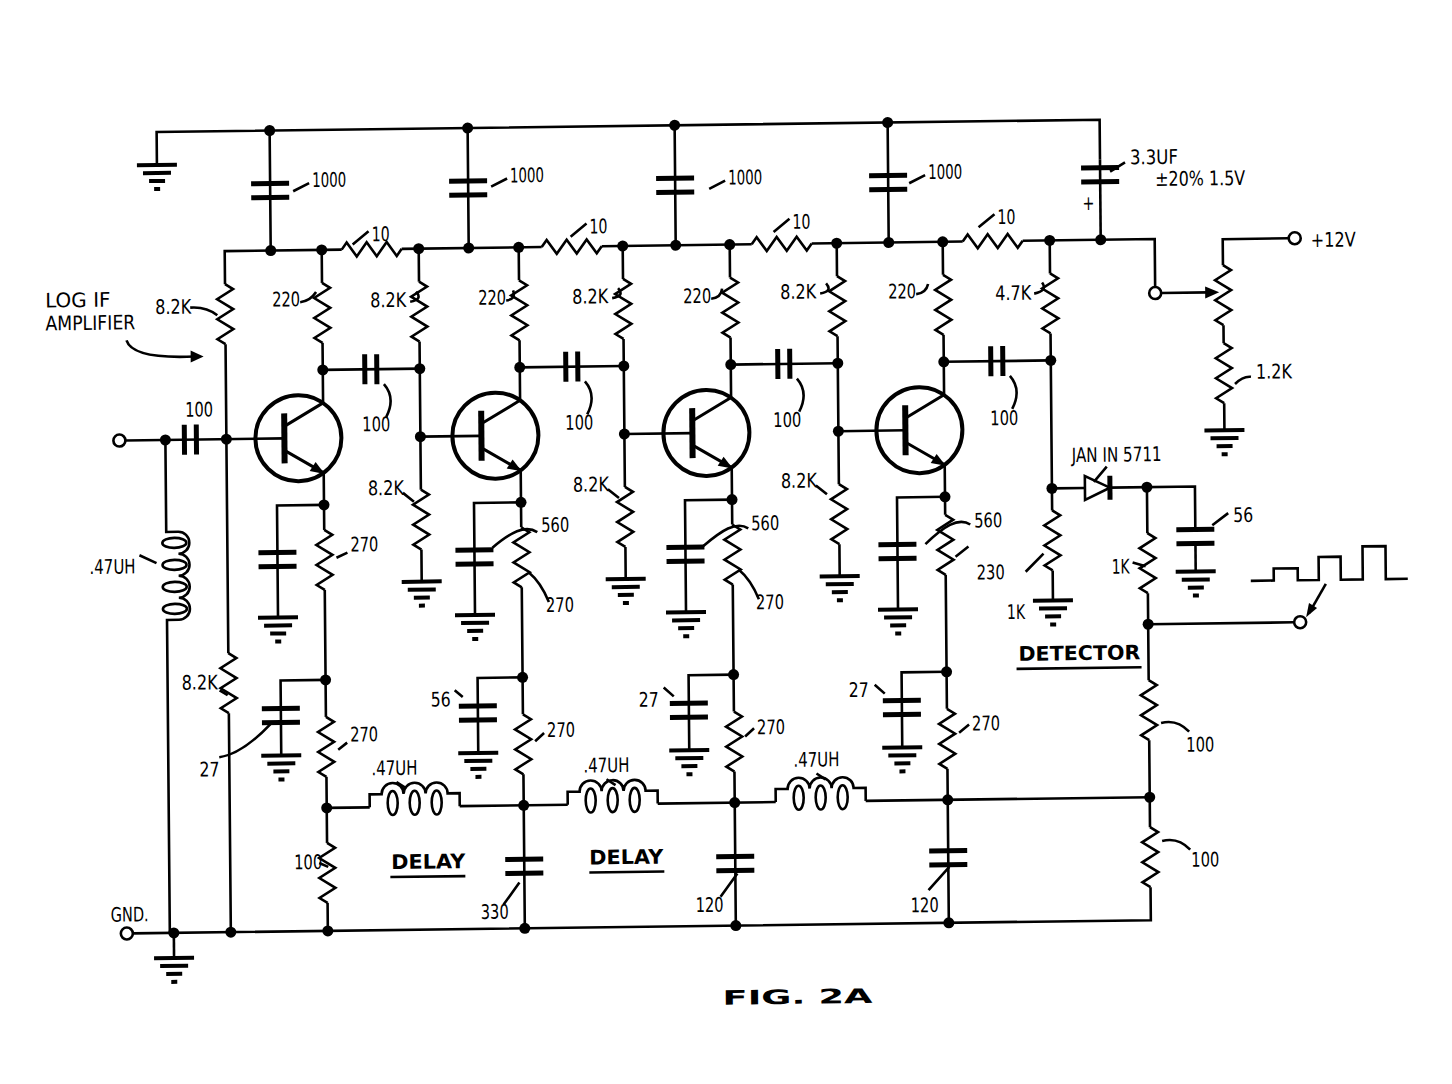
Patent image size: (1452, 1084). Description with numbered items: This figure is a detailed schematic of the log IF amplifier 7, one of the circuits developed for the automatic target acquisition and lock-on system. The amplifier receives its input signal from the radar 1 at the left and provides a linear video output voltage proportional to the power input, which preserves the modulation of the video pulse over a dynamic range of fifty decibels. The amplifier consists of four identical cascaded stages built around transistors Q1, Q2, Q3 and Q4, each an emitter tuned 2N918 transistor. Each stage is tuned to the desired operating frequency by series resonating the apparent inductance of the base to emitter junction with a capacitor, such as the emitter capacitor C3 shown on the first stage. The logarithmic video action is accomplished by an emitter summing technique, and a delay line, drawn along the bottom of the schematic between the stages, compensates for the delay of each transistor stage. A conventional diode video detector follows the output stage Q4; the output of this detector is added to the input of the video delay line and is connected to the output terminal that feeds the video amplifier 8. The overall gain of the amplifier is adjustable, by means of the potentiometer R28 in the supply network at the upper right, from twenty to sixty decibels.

The radar 1 is at (165, 415).
The IF amplifier 7 is at (660, 312).
The video amplifier 8 is at (1277, 620).
The transistor stage Q1 is at (284, 392).
The transistor stage Q2 is at (483, 391).
The transistor stage Q3 is at (693, 390).
The transistor stage Q4 is at (905, 391).
The capacitor C3 is at (267, 542).
The gain adjustment potentiometer R28 is at (1236, 298).